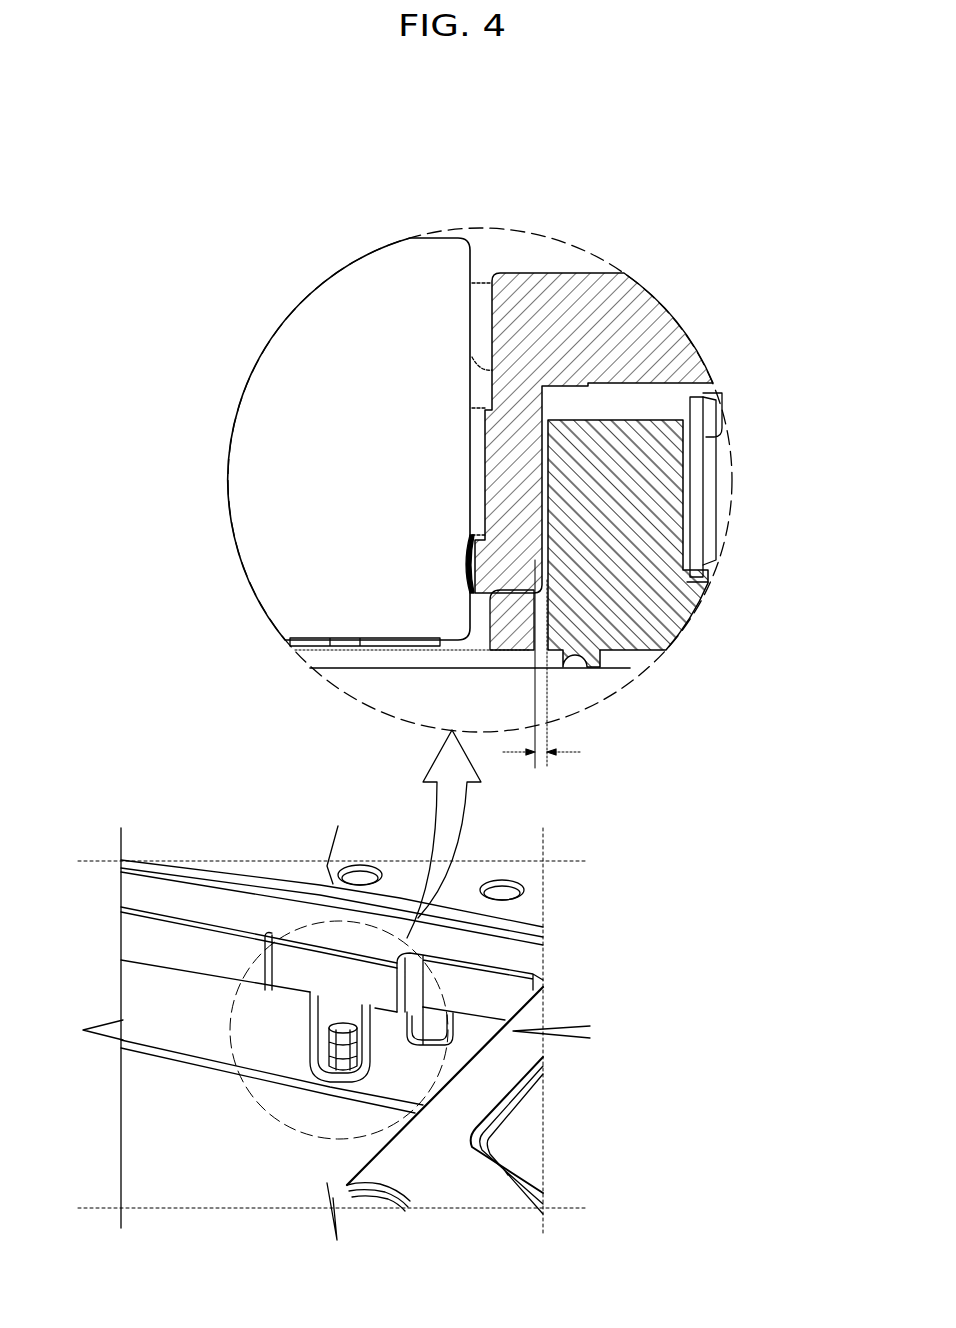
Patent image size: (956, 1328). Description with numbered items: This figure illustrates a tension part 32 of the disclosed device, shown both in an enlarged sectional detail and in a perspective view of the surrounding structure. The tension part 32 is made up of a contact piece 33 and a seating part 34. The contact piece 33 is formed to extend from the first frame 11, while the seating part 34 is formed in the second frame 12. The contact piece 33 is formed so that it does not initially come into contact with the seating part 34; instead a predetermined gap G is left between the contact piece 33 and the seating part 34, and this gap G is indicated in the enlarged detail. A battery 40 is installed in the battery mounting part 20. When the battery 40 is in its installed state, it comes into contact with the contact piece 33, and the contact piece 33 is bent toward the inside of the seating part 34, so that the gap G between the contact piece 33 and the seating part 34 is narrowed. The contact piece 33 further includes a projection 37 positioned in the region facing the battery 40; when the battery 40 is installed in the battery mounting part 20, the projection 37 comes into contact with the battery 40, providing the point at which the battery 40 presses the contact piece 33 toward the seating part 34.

The first frame 11 is at (582, 272).
The second frame 12 is at (640, 411).
The battery mounting part 20 is at (318, 637).
The tension part 32 is at (793, 478).
The contact piece 33 is at (540, 493).
The seating part 34 is at (548, 540).
The projection 37 is at (467, 572).
The battery 40 is at (270, 462).
The gap G is at (541, 678).